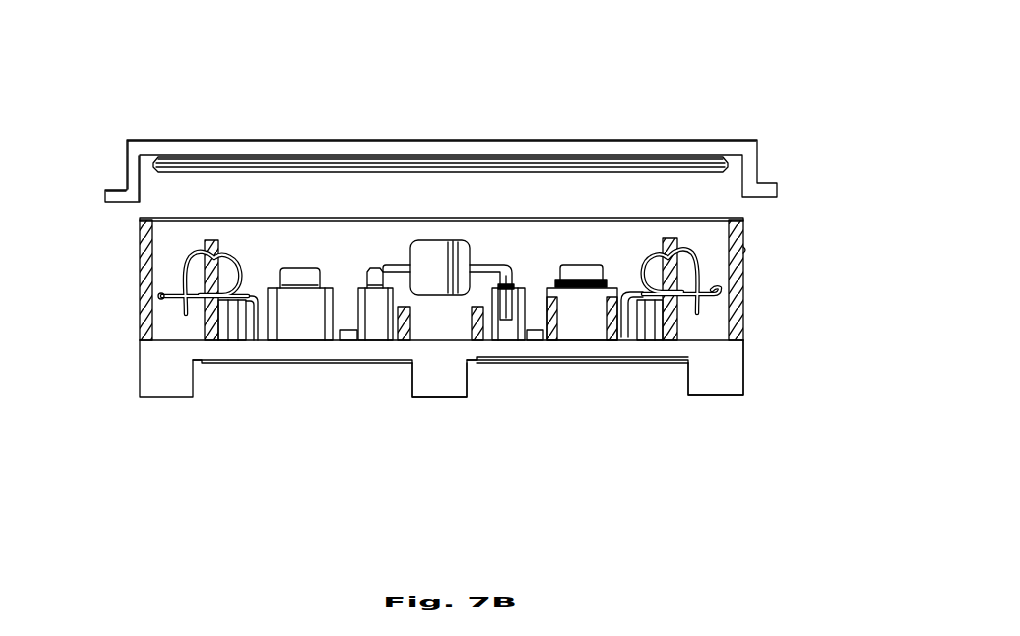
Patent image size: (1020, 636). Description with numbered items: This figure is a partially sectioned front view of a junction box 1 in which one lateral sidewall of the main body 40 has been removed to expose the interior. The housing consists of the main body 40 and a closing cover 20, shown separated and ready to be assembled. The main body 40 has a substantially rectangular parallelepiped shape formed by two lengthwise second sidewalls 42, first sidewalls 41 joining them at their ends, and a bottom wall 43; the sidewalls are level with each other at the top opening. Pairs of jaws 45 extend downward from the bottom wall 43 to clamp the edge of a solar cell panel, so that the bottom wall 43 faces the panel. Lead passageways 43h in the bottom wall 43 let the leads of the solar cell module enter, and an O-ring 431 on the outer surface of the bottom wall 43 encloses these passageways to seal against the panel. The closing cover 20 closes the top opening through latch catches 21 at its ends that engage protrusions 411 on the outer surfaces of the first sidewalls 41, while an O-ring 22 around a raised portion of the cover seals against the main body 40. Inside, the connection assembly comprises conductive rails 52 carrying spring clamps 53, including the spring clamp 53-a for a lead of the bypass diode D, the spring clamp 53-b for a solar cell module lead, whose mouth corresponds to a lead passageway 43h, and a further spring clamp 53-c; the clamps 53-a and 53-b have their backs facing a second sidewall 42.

The junction box 1 is at (530, 24).
The closing cover 20 is at (439, 131).
The latch catch 21 is at (130, 177).
The O-ring 22 is at (720, 162).
The main body 40 is at (440, 367).
The first sidewall 41 is at (745, 316).
The protrusion 411 is at (746, 250).
The second sidewall 42 is at (715, 217).
The bottom wall 43 is at (638, 350).
The O-ring 431 is at (513, 363).
The lead passageway 43h is at (583, 350).
The jaw 45 is at (720, 370).
The conductive rail 52 is at (160, 298).
The spring clamp 53 is at (300, 400).
The spring clamp for clamping a lead of the bypass diode 53-a is at (386, 370).
The spring clamp for clamping a lead of the solar cell module 53-b is at (305, 325).
The spring clamp 53-c is at (187, 312).
The bypass diode D is at (438, 280).